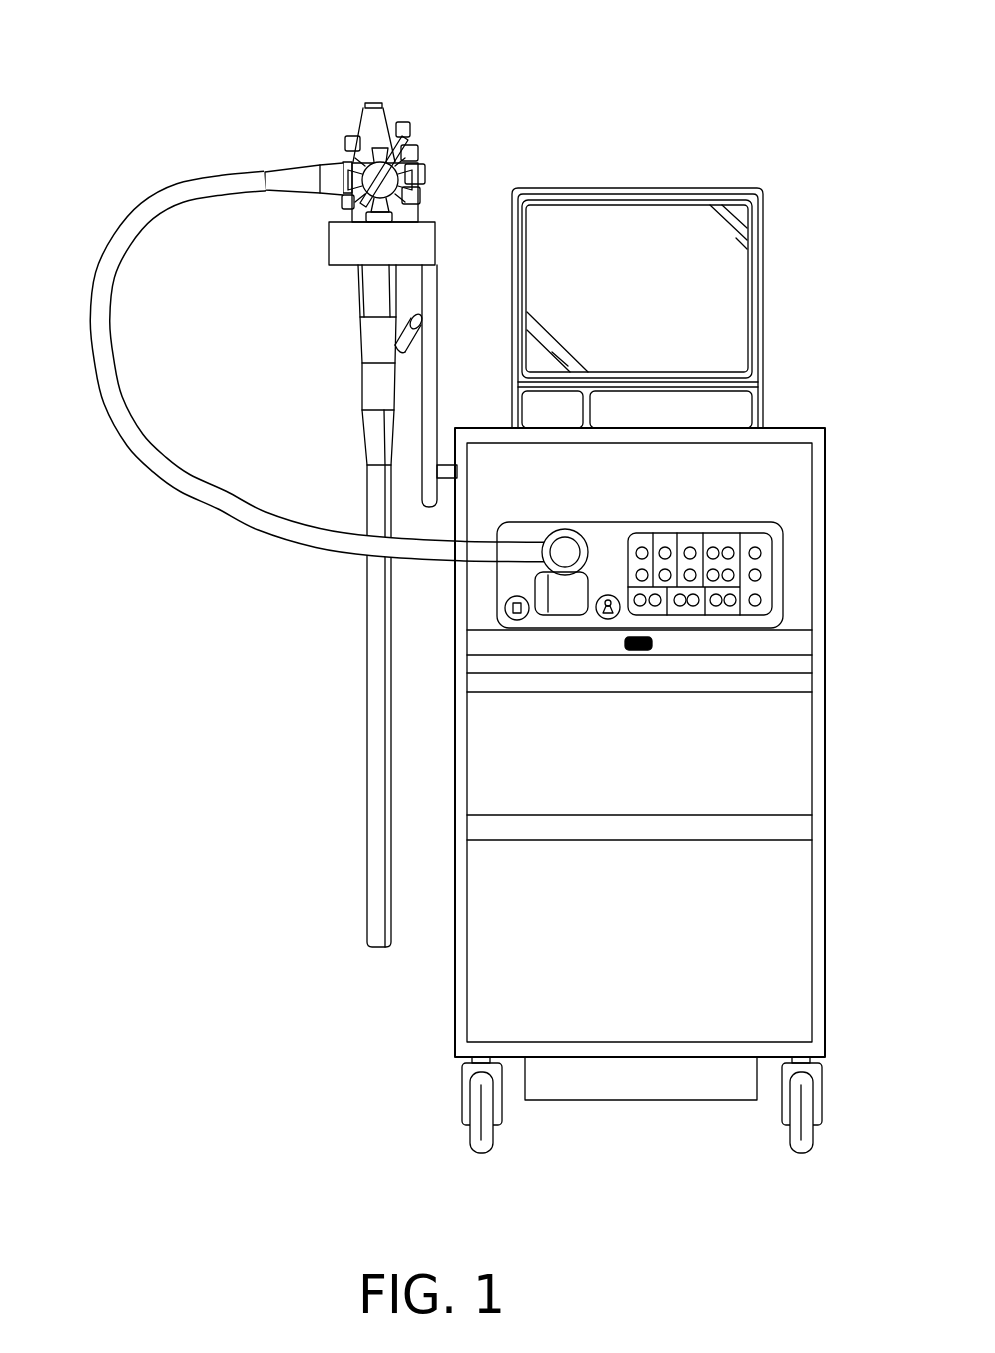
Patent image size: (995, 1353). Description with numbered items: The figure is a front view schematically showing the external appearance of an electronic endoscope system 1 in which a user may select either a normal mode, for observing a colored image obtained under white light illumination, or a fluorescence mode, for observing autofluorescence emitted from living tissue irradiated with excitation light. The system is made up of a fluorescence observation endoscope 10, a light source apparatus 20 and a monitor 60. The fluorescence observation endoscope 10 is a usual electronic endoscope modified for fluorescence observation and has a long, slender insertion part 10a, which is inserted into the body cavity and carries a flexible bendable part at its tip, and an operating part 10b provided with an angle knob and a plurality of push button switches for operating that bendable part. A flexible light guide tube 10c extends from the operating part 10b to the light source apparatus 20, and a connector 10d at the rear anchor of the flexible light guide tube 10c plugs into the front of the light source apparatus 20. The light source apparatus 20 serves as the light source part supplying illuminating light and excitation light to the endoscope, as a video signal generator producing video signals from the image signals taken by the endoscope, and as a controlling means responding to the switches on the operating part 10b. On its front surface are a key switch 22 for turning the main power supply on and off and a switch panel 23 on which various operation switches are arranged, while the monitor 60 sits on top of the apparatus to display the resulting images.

The electronic endoscope system 1 is at (594, 63).
The fluorescence observation endoscope 10 is at (240, 628).
The insertion part 10a is at (378, 802).
The operating part 10b is at (374, 130).
The flexible light guide tube 10c is at (182, 470).
The connector 10d is at (588, 537).
The light source apparatus 20 is at (681, 486).
The key switch 22 is at (592, 618).
The switch panel 23 is at (747, 537).
The monitor 60 is at (762, 313).